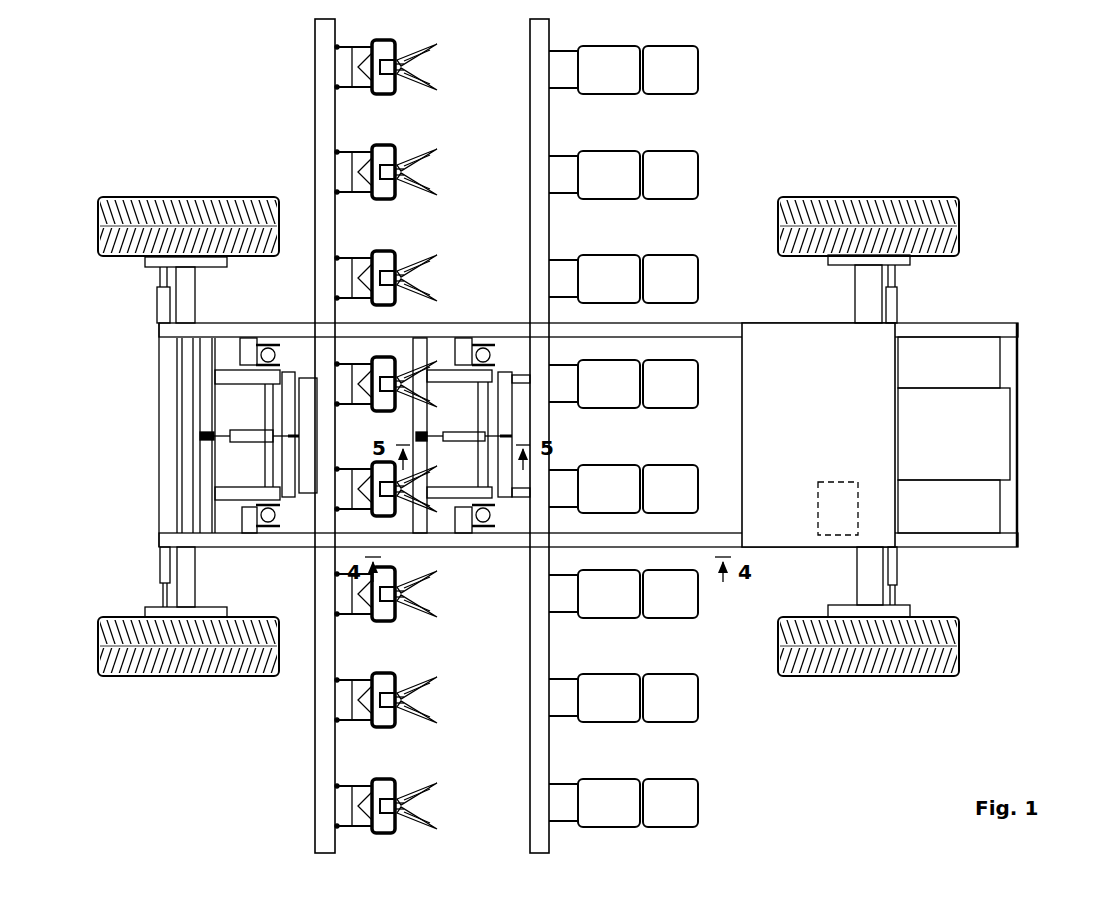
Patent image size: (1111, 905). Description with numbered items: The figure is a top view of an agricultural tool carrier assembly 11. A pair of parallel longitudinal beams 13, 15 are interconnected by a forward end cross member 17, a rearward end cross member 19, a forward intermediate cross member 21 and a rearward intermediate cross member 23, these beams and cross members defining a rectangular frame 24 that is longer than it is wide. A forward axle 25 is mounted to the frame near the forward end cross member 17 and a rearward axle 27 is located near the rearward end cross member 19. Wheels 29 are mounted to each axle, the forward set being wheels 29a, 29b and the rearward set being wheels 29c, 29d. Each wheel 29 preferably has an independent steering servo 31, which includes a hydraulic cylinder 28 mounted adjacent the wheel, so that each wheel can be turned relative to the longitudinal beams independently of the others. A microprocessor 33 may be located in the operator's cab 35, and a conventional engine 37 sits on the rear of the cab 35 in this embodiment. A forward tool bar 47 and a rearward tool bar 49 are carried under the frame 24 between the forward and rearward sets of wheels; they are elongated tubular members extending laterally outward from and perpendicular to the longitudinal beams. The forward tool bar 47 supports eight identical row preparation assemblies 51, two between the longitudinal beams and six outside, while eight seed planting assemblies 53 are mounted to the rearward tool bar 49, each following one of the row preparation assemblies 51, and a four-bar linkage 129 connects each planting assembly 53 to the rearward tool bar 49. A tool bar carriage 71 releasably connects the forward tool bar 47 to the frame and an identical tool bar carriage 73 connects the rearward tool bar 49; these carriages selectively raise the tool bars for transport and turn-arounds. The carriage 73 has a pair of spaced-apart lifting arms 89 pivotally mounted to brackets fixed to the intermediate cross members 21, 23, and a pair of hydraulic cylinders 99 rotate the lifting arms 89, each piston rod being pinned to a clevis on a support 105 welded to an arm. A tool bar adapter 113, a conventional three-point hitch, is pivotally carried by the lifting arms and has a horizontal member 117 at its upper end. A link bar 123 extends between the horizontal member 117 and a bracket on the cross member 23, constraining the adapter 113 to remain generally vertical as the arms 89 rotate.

The agricultural tool carrier assembly 11 is at (774, 792).
The longitudinal beam 13 is at (943, 548).
The longitudinal beam 15 is at (940, 330).
The forward end cross member 17 is at (165, 412).
The rearward end cross member 19 is at (1013, 518).
The forward intermediate cross member 21 is at (208, 512).
The rearward intermediate cross member 23 is at (420, 368).
The rectangular frame 24 is at (1026, 334).
The forward axle 25 is at (185, 581).
The rearward axle 27 is at (860, 286).
The hydraulic cylinder 28 is at (160, 565).
The wheel 29 is at (178, 645).
The forward wheel 29a is at (160, 677).
The forward wheel 29b is at (183, 198).
The rearward wheel 29c is at (896, 676).
The rearward wheel 29d is at (962, 222).
The steering servo 31 is at (174, 645).
The microprocessor 33 is at (838, 482).
The cab 35 is at (783, 546).
The engine 37 is at (985, 424).
The forward tool bar 47 is at (325, 750).
The rearward tool bar 49 is at (540, 812).
The row preparation assembly 51 is at (392, 774).
The seed planting assembly 53 is at (614, 773).
The tool bar carriage 71 is at (230, 356).
The tool bar carriage 73 is at (479, 401).
The lifting arm 89 is at (232, 387).
The hydraulic cylinder 99 is at (478, 338).
The support 105 is at (487, 476).
The tool bar adapter 113 is at (512, 426).
The horizontal member 117 is at (540, 384).
The link bar 123 is at (462, 430).
The linkage 129 is at (567, 678).